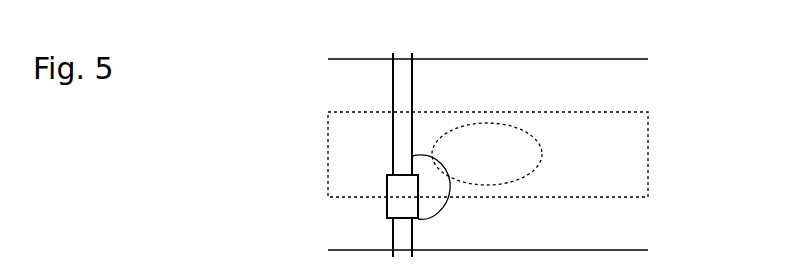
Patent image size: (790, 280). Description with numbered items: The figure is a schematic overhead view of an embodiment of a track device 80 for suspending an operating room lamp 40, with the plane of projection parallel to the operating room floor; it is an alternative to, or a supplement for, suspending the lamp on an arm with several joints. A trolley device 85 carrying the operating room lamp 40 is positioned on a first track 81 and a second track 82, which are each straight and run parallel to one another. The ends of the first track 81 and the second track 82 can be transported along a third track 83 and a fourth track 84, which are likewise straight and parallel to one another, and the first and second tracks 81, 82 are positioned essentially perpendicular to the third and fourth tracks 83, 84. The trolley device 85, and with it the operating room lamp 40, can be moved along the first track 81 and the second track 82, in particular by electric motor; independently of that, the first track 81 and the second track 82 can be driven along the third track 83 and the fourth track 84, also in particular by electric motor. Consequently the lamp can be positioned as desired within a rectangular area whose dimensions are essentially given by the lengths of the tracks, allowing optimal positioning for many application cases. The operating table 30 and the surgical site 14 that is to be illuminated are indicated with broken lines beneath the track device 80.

The track device 80 is at (244, 93).
The first track 81 is at (393, 97).
The second track 82 is at (412, 80).
The third track 83 is at (343, 59).
The fourth track 84 is at (343, 250).
The trolley device 85 is at (387, 183).
The operating room lamp 40 is at (420, 158).
The operating table 30 is at (645, 120).
The surgical site 14 is at (522, 178).